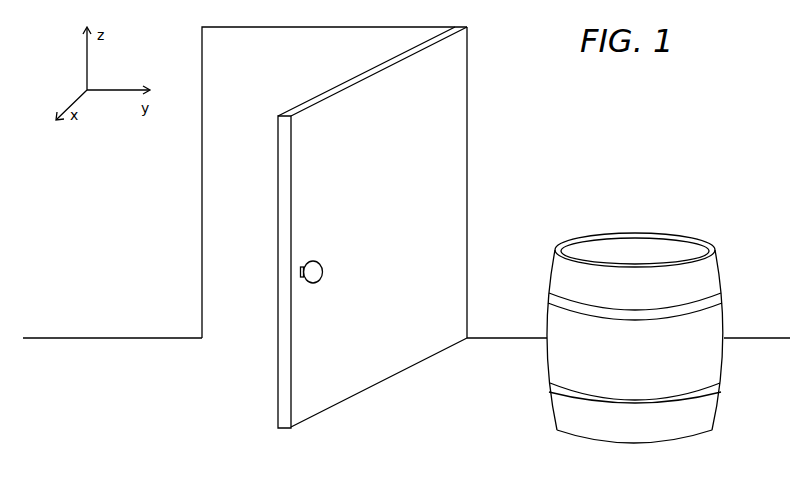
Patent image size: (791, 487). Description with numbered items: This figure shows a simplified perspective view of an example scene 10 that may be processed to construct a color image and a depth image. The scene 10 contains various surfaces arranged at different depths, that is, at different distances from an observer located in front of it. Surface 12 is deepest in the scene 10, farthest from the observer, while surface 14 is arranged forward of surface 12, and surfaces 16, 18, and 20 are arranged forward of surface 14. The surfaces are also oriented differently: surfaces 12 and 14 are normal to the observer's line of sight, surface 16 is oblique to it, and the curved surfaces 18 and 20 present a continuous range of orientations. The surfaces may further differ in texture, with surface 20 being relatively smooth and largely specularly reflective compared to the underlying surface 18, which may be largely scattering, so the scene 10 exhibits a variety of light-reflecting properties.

The scene 10 is at (192, 420).
The surface 12 is at (233, 181).
The surface 14 is at (163, 181).
The surface 16 is at (318, 181).
The curved surface 18 is at (629, 363).
The curved surface 20 is at (711, 394).